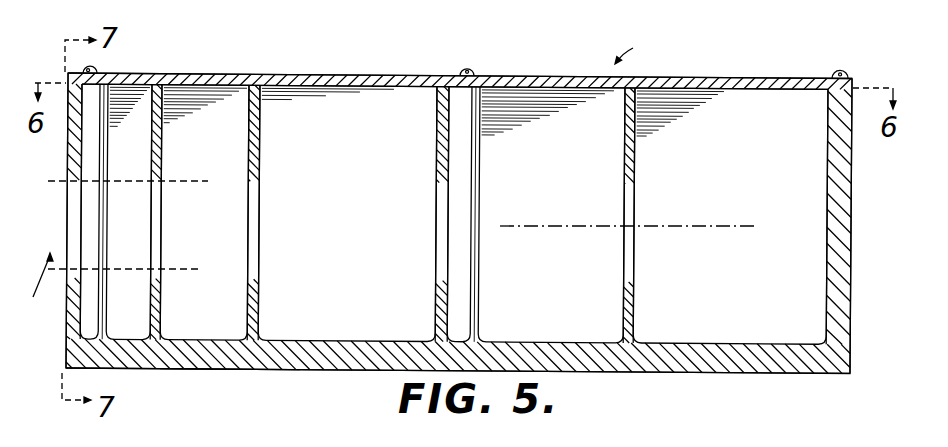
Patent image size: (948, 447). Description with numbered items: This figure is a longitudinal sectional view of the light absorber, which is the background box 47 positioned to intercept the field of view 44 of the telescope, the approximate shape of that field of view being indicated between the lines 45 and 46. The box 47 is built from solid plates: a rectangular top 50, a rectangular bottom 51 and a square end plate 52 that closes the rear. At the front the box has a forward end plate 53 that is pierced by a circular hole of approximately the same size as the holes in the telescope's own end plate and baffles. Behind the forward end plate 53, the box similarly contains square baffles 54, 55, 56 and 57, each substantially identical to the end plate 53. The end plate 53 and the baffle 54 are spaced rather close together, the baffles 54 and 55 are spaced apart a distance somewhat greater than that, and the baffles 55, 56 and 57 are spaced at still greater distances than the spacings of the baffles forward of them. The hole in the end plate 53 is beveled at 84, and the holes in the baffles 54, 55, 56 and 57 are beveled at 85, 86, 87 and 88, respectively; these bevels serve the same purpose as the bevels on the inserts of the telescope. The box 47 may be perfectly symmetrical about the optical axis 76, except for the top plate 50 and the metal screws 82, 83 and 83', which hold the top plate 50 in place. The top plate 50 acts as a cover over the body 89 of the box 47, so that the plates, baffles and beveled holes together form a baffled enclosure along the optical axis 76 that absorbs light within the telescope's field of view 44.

The field of view 44 is at (40, 283).
The line 45 is at (173, 270).
The line 46 is at (170, 181).
The background box 47 is at (636, 51).
The rectangular top 50 is at (715, 78).
The rectangular bottom 51 is at (605, 364).
The square end plate 52 is at (843, 207).
The forward end plate 53 is at (70, 155).
The baffle 54 is at (160, 100).
The baffle 55 is at (262, 127).
The baffle 56 is at (436, 128).
The baffle 57 is at (626, 133).
The optical axis 76 is at (677, 228).
The metal screw 82 is at (96, 71).
The metal screw 83 is at (841, 62).
The metal screw 83' is at (451, 63).
The bevel 84 is at (68, 282).
The bevel 85 is at (150, 284).
The bevel 86 is at (250, 281).
The bevel 87 is at (440, 282).
The bevel 88 is at (627, 268).
The body 89 is at (221, 372).